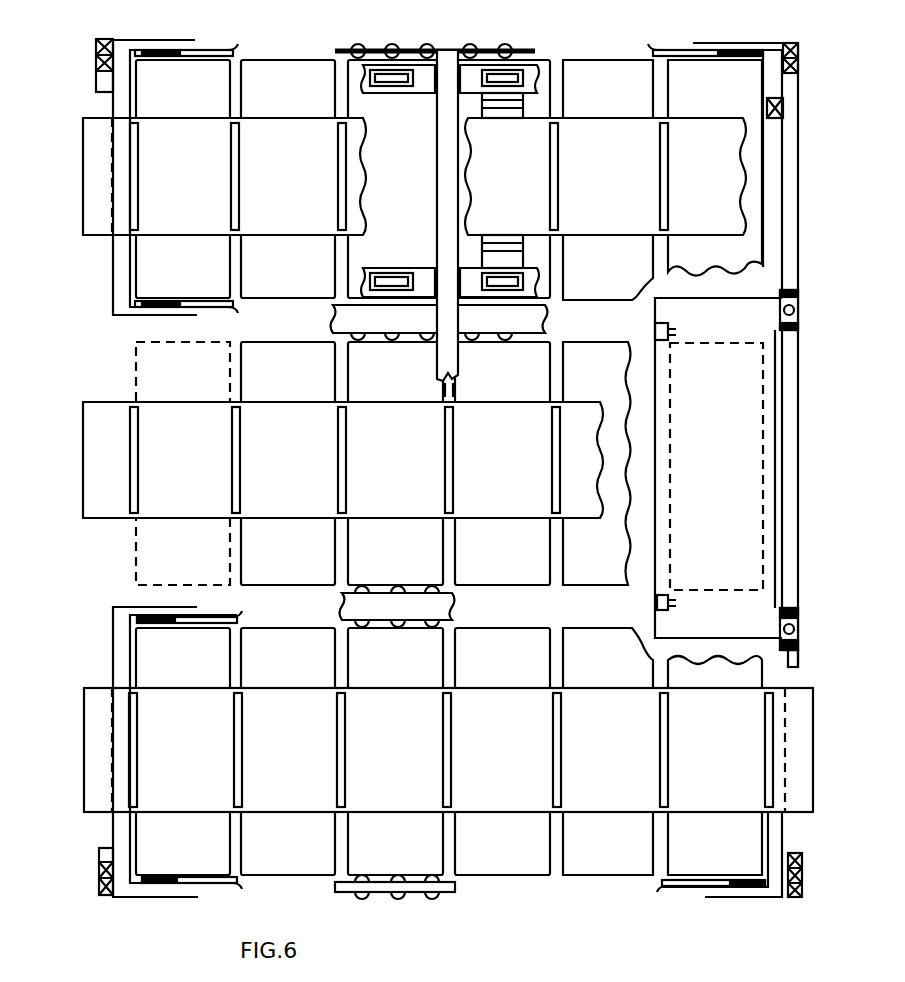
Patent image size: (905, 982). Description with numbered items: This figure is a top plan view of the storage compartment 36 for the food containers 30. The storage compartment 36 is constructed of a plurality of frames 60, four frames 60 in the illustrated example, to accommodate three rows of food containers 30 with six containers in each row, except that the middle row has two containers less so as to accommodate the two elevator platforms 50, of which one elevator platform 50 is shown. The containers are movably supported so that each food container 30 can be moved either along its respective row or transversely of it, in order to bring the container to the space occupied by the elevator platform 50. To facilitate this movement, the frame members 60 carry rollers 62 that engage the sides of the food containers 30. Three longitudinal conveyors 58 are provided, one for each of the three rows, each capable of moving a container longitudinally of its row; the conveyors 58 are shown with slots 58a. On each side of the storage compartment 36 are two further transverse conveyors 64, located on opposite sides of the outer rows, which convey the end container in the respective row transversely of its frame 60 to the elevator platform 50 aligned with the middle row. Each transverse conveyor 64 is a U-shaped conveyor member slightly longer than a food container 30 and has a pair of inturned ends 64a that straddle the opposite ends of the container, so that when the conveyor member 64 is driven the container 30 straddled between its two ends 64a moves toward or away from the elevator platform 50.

The food container 30 is at (272, 72).
The storage compartment 36 is at (116, 567).
The elevator platform 50 is at (755, 470).
The longitudinal conveyor 58 is at (448, 465).
The slot 58a is at (237, 198).
The frame 60 is at (410, 49).
The roller 62 is at (360, 47).
The transverse conveyor 64 is at (785, 197).
The inturned end 64a is at (166, 47).